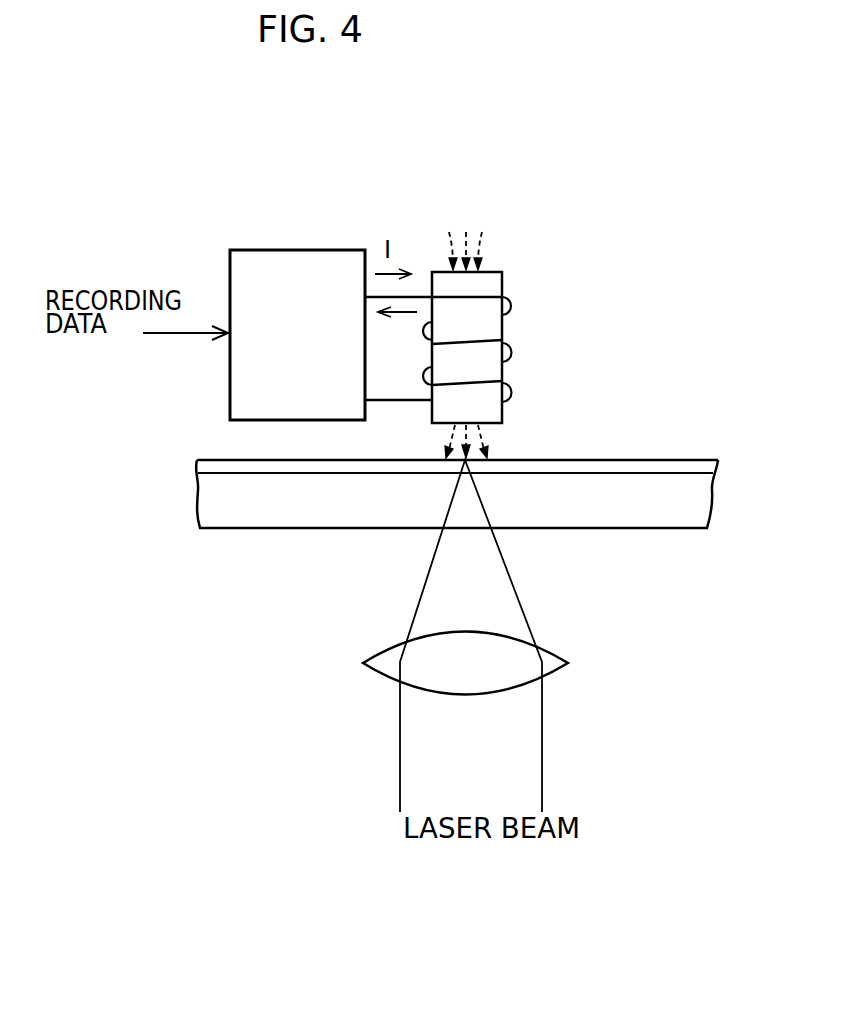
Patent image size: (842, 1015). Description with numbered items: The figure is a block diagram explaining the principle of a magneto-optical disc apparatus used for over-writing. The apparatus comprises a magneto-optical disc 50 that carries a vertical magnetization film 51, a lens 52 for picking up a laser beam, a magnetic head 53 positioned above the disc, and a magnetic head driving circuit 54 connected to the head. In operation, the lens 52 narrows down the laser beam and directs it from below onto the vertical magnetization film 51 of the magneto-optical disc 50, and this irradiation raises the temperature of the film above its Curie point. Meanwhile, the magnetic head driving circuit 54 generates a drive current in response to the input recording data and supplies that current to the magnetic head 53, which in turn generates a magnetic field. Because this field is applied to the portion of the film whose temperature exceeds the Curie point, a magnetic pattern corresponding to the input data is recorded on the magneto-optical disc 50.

The magneto-optical disc 50 is at (715, 500).
The vertical magnetization film 51 is at (661, 460).
The lens 52 is at (556, 645).
The magnetic head 53 is at (503, 281).
The magnetic head driving circuit 54 is at (277, 250).